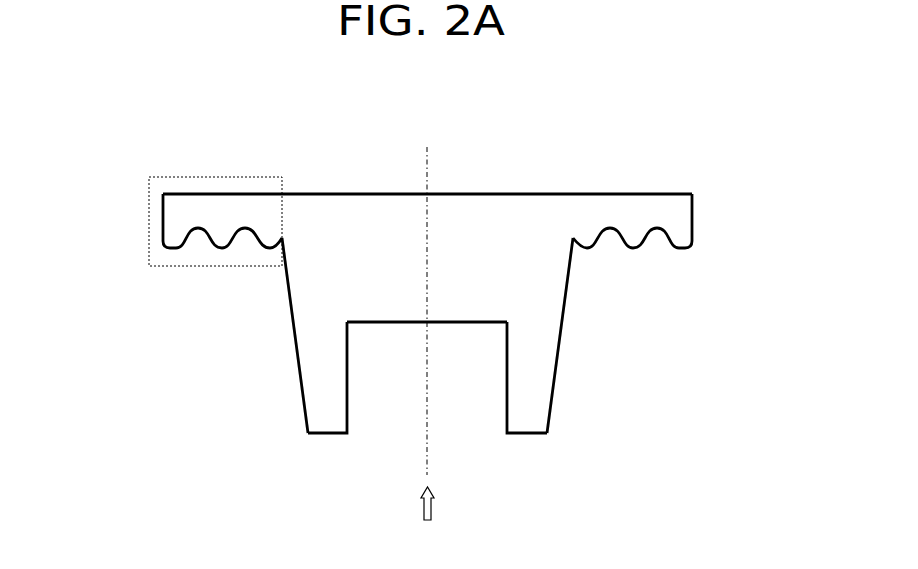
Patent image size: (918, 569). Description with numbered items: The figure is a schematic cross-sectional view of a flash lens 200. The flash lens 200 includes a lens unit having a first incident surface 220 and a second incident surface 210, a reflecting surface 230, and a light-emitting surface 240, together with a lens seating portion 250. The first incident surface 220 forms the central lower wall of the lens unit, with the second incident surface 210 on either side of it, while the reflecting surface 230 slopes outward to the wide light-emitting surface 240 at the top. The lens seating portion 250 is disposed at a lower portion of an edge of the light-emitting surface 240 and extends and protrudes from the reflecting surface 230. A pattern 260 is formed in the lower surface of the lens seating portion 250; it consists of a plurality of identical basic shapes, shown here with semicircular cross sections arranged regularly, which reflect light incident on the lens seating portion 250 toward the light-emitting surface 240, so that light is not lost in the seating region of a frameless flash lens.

The flash lens 200 is at (690, 153).
The second incident surface 210 is at (347, 393).
The first incident surface 220 is at (403, 322).
The reflecting surface 230 is at (292, 335).
The light-emitting surface 240 is at (507, 192).
The lens seating portion 250 is at (213, 177).
The pattern 260 is at (172, 252).